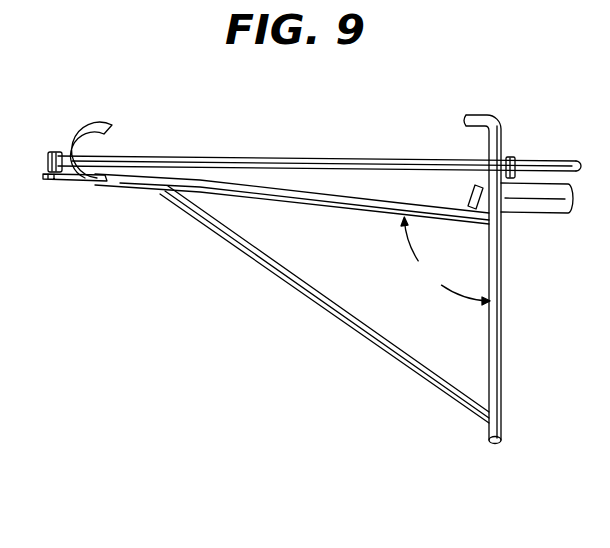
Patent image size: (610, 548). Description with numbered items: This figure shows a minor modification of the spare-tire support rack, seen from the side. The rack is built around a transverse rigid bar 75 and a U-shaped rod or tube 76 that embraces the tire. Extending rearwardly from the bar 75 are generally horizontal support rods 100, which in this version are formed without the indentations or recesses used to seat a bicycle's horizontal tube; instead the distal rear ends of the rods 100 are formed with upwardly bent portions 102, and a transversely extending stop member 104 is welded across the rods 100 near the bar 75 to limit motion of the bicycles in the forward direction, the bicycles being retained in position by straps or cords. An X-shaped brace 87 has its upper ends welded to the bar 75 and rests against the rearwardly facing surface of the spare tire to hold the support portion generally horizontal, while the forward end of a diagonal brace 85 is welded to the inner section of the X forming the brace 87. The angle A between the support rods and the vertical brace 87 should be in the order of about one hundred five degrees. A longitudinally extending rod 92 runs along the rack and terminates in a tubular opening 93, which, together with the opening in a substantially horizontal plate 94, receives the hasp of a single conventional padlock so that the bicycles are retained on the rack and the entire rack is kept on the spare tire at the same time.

The longitudinally extending rod 92 is at (210, 157).
The tubular opening 93 is at (50, 157).
The horizontal plate 94 is at (65, 182).
The upwardly bent portions 102 is at (98, 117).
The horizontal support rods 100 is at (298, 203).
The diagonal brace 85 is at (330, 312).
The X-shaped brace 87 is at (502, 322).
The stop member 104 is at (472, 190).
The transverse rigid bar 75 is at (513, 158).
The U-shaped rod or tube 76 is at (540, 213).
The angle A is at (445, 261).